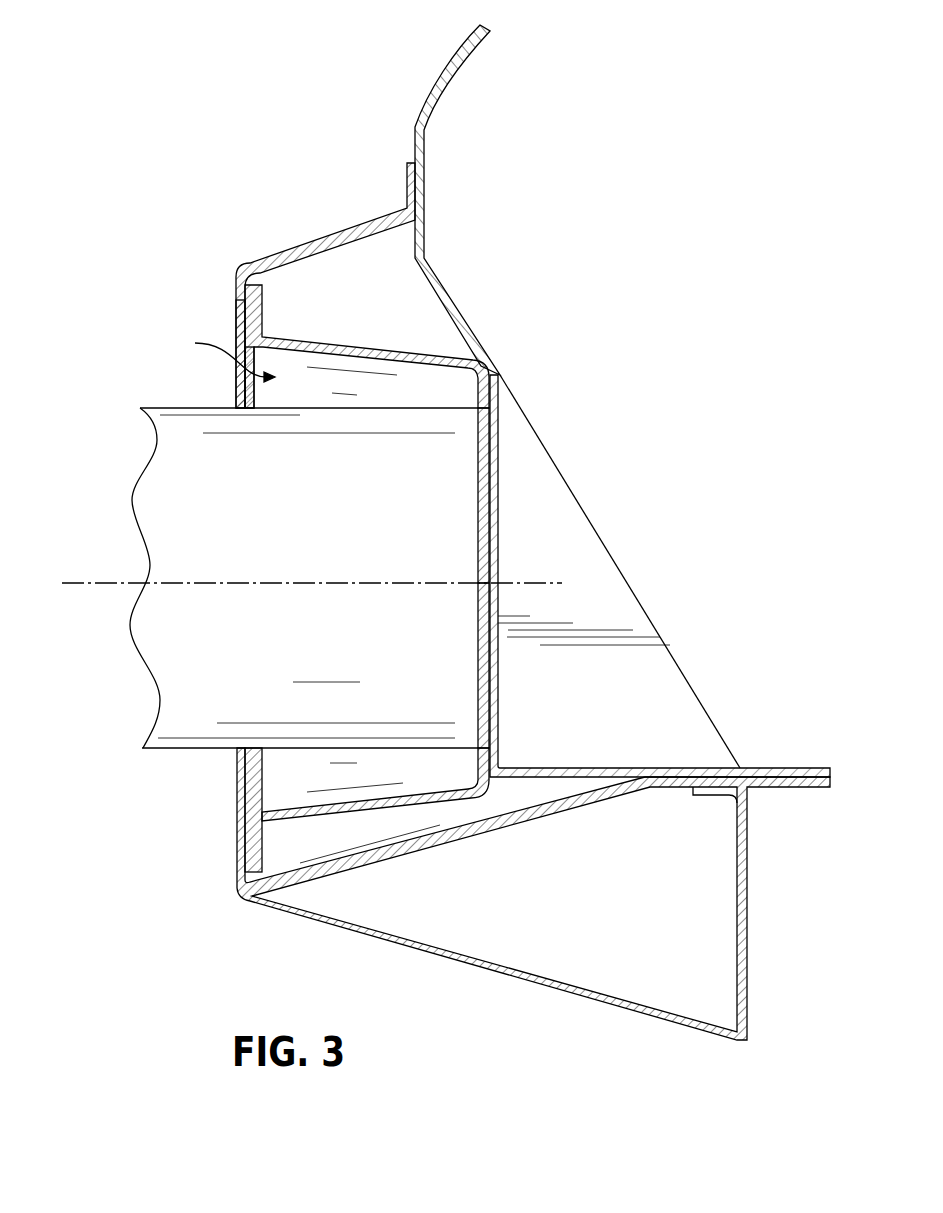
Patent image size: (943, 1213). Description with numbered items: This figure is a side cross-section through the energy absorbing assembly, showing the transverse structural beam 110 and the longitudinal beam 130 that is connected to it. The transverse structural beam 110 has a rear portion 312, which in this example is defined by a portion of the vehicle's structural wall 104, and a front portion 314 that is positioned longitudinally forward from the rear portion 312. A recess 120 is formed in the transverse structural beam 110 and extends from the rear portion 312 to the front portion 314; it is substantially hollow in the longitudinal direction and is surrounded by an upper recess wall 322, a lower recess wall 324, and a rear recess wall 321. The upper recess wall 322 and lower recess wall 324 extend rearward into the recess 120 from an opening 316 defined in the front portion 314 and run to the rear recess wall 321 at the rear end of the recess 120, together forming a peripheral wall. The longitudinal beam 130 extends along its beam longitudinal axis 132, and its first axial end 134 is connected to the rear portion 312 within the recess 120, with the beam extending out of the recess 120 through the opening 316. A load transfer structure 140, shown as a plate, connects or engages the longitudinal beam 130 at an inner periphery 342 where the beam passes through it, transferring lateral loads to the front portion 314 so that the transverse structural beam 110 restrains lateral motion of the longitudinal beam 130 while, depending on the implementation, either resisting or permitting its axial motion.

The structural wall 104 is at (440, 72).
The transverse structural beam 110 is at (327, 235).
The front portion 314 is at (240, 298).
The upper recess wall 322 is at (332, 345).
The inner periphery 342 is at (256, 407).
The recess 120 is at (220, 357).
The longitudinal beam 130 is at (170, 407).
The beam longitudinal axis 132 is at (97, 580).
The first axial end 134 is at (483, 487).
The rear recess wall 321 is at (478, 680).
The rear portion 312 is at (493, 527).
The lower recess wall 324 is at (343, 815).
The load transfer structure 140 is at (245, 760).
The opening 316 is at (238, 817).